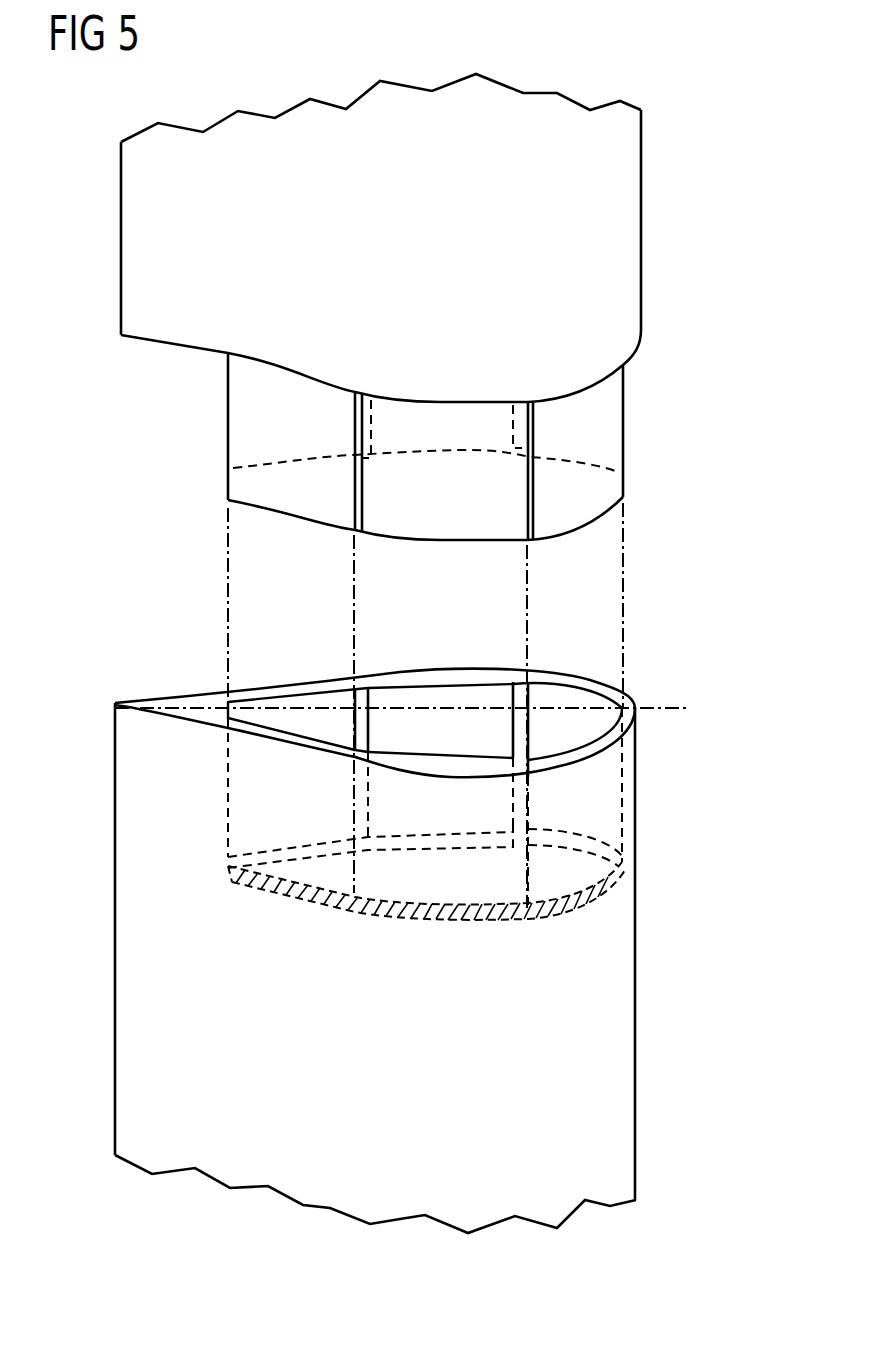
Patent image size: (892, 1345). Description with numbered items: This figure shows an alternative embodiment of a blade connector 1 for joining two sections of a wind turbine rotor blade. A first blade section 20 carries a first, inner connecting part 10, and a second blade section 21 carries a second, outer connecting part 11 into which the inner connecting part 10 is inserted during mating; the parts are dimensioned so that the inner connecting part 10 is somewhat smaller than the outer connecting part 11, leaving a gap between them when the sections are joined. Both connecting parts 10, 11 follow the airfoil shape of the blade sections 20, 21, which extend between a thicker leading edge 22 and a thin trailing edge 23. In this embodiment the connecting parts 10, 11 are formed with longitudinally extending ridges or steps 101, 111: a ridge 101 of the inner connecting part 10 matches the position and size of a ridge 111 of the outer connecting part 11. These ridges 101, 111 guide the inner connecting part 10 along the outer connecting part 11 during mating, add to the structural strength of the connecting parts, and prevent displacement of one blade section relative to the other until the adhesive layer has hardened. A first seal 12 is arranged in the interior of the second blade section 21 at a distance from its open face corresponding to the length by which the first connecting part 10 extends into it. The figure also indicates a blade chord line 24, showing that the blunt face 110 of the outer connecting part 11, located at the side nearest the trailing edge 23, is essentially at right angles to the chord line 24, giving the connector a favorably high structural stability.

The blade connector 1 is at (705, 597).
The first connecting part 10 is at (612, 415).
The ridge 101 is at (355, 445).
The second connecting part 11 is at (628, 812).
The blunt face 110 is at (230, 700).
The ridge 111 is at (363, 750).
The first seal 12 is at (565, 912).
The first blade section 20 is at (626, 240).
The second blade section 21 is at (620, 1022).
The leading edge 22 is at (643, 143).
The trailing edge 23 is at (121, 235).
The blade chord line 24 is at (673, 706).